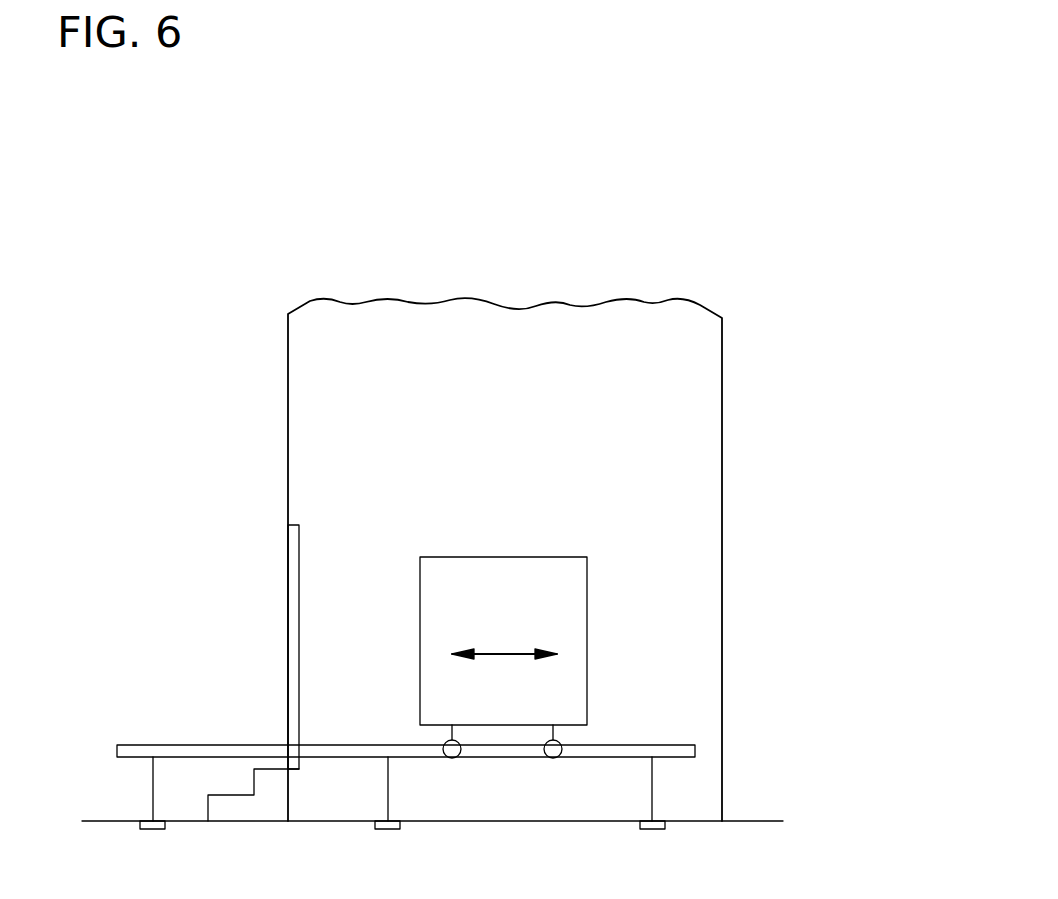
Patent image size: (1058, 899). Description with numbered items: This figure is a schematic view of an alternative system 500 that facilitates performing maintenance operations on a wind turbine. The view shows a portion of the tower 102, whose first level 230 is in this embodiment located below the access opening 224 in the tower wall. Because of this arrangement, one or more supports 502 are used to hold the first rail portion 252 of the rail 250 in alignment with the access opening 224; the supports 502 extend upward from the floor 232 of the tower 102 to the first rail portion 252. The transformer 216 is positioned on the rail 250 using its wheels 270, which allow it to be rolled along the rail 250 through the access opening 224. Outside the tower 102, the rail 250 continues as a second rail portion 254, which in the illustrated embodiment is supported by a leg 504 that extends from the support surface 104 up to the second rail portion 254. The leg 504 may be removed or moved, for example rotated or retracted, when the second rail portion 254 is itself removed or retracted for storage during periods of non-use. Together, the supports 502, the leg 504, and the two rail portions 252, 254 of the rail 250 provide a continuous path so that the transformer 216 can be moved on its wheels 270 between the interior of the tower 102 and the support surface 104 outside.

The alternative system 500 is at (597, 158).
The tower 102 is at (287, 328).
The access opening 224 is at (287, 566).
The floor 232 is at (327, 820).
The first level 230 is at (775, 821).
The support surface 104 is at (92, 821).
The second rail portion 254 is at (240, 745).
The first rail portion 252 is at (616, 745).
The rail 250 is at (660, 745).
The leg 504 is at (152, 790).
The supports 502 is at (388, 805).
The transformer 216 is at (577, 580).
The wheels 270 is at (550, 757).